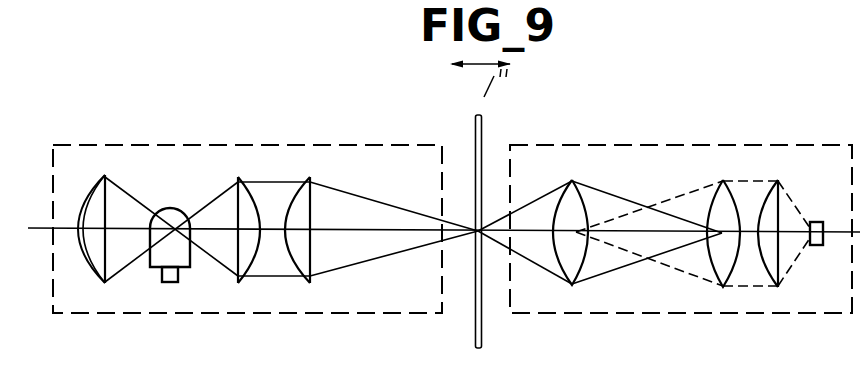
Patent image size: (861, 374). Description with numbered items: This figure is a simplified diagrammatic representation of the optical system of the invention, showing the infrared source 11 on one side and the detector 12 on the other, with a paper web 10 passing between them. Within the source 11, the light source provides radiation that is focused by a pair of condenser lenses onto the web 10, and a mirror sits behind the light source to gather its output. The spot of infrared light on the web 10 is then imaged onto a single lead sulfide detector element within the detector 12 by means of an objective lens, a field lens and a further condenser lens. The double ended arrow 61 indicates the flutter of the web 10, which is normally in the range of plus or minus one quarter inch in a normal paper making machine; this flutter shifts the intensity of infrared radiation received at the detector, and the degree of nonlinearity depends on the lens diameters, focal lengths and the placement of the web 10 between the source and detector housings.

The web 10 is at (475, 134).
The source 11 is at (297, 111).
The detector 12 is at (798, 114).
The double ended arrow 61 is at (472, 64).